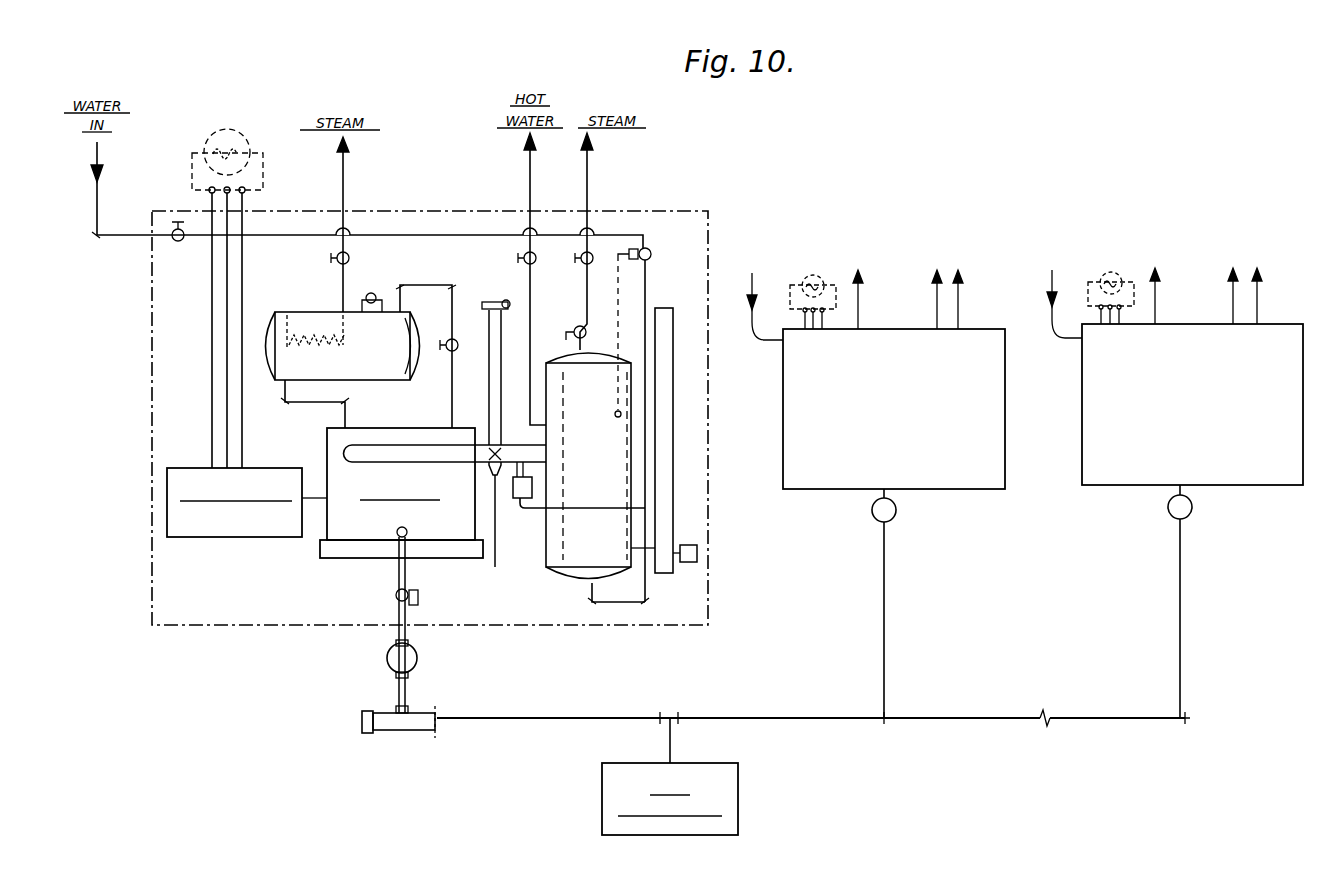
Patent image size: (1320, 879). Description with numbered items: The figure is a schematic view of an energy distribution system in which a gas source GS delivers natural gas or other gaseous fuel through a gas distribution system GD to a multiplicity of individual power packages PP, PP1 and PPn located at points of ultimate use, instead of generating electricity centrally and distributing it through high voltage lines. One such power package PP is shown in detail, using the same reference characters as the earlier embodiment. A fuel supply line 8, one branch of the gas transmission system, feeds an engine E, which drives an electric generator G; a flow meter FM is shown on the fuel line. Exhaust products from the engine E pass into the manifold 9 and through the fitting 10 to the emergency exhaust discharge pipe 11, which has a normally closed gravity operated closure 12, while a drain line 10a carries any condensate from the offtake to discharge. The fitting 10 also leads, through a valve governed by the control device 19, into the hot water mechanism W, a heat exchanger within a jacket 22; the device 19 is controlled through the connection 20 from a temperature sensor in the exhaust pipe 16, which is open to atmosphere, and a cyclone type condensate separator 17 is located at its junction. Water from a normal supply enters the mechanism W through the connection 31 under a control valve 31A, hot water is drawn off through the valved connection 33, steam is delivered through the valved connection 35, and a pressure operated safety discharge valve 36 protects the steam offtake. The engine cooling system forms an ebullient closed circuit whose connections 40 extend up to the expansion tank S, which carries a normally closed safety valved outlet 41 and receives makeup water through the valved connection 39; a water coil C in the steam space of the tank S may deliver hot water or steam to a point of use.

The fuel supply line 8 is at (396, 574).
The manifold 9 is at (438, 444).
The fitting 10 is at (503, 445).
The drain line 10a is at (495, 565).
The emergency exhaust discharge pipe 11 is at (488, 373).
The gravity operated closure 12 is at (498, 302).
The exhaust pipe 16 is at (673, 398).
The condensate separator 17 is at (668, 578).
The valve control device 19 is at (513, 502).
The connection 20 is at (592, 507).
The jacket 22 is at (555, 556).
The water supply connection 31 is at (650, 285).
The control valve 31A is at (654, 250).
The valved hot water connection 33 is at (534, 270).
The valved steam connection 35 is at (587, 294).
The pressure operated safety discharge valve 36 is at (576, 328).
The valved makeup water connection 39 is at (315, 407).
The connections 40 is at (452, 390).
The safety valved outlet 41 is at (376, 292).
The water coil C is at (345, 343).
The engine E is at (374, 427).
The electric generator G is at (240, 541).
The expansion tank S is at (327, 311).
The hot water mechanism W is at (580, 443).
The power package PP is at (410, 211).
The power package PP1 is at (820, 490).
The power package PPn is at (1113, 487).
The flow meter FM is at (402, 659).
The gas distribution system GD is at (413, 723).
The gas source GS is at (740, 787).